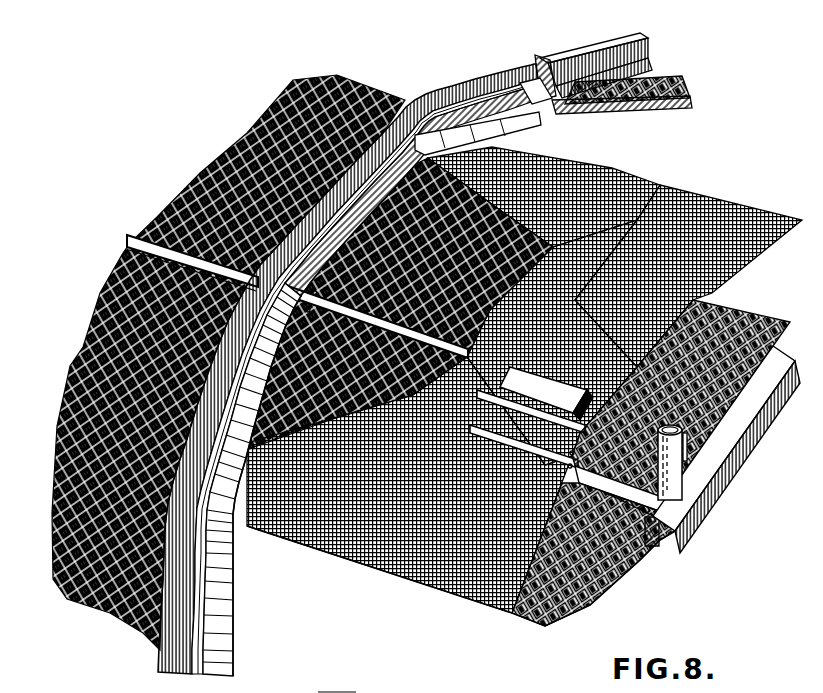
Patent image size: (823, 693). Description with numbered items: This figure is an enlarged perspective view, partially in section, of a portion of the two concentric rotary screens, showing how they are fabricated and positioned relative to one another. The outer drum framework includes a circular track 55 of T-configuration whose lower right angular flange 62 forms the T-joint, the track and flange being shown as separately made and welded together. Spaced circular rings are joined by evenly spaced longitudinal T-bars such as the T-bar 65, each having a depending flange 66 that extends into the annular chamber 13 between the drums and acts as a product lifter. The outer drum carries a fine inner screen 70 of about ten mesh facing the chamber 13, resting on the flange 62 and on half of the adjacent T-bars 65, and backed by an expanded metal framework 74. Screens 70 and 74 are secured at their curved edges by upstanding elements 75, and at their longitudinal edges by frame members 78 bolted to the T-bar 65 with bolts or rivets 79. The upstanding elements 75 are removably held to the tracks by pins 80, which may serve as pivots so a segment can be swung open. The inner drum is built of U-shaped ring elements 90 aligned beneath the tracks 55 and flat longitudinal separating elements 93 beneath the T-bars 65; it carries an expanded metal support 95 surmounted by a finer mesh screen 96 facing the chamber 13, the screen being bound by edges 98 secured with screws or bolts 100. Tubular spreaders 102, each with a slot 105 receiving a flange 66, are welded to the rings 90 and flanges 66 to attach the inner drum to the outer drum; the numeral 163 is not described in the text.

The annular chamber 13 is at (652, 235).
The circular track 55 is at (649, 43).
The right angular flange 62 is at (545, 118).
The T-bar 65 is at (566, 378).
The depending flange 66 is at (636, 398).
The inner screen 70 is at (645, 187).
The expanded metal framework 74 is at (690, 78).
The upstanding element 75 is at (652, 63).
The frame member 78 is at (300, 285).
The bolt or rivet 79 is at (546, 342).
The pin 80 is at (298, 290).
The ring element 90 is at (708, 492).
The longitudinal separating element 93 is at (640, 502).
The expanded metal support 95 is at (606, 598).
The finer mesh screen 96 is at (503, 614).
The edge 98 is at (409, 485).
The screw or bolt 100 is at (612, 560).
The tubular spreader 102 is at (682, 470).
The slot 105 is at (690, 438).
The member 163 is at (337, 689).